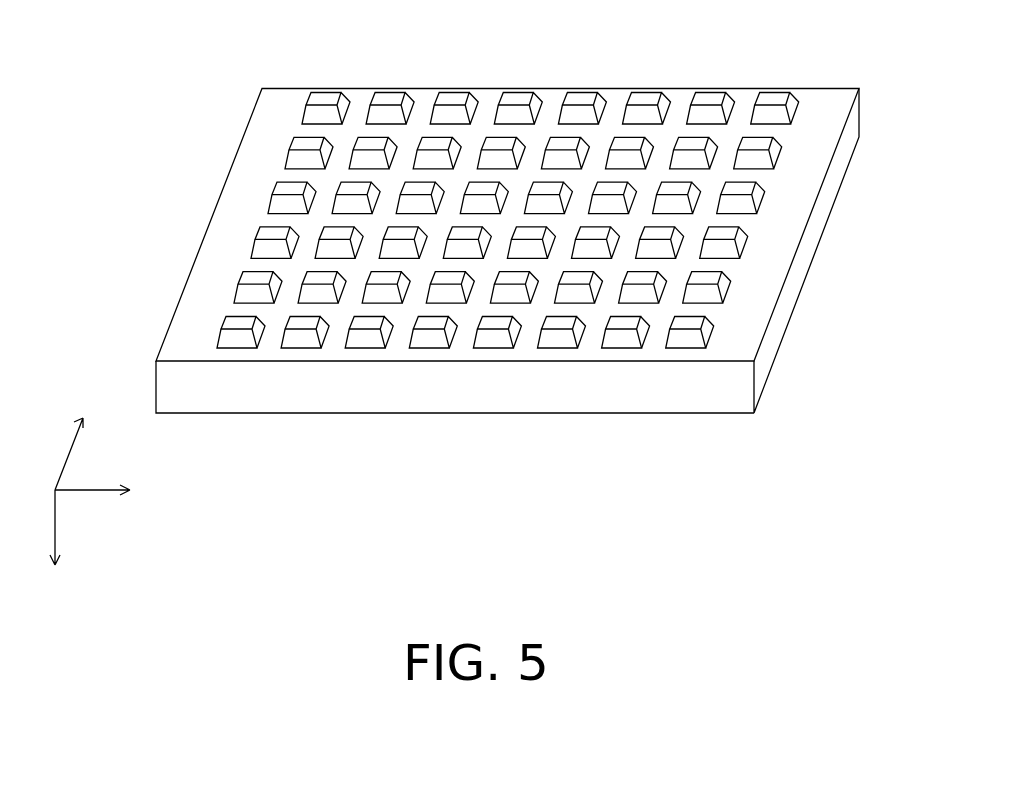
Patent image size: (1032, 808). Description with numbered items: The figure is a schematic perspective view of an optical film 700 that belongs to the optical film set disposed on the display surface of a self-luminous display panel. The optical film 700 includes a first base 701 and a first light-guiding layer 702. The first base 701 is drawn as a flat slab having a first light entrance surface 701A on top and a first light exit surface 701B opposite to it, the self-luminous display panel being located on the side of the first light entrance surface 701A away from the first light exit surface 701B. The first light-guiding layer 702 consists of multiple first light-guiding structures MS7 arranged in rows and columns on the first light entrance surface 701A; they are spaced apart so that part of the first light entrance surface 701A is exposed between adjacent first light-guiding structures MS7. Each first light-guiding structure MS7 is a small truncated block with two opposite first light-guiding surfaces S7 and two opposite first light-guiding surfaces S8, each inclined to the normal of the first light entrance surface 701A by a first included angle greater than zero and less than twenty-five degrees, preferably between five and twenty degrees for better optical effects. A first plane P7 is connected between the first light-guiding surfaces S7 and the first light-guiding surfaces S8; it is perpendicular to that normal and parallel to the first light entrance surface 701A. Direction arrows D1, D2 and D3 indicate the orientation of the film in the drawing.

The optical film 700 is at (544, 235).
The first base 701 is at (544, 251).
The first light entrance surface 701A is at (827, 123).
The first light exit surface 701B is at (793, 323).
The first light-guiding layer 702 is at (531, 235).
The first light-guiding structures MS7 is at (531, 235).
The first plane P7 is at (678, 369).
The first light-guiding surfaces S7 is at (710, 328).
The first light-guiding surfaces S8 is at (707, 311).
The first direction D1 is at (76, 437).
The second direction D2 is at (107, 491).
The third direction D3 is at (57, 544).